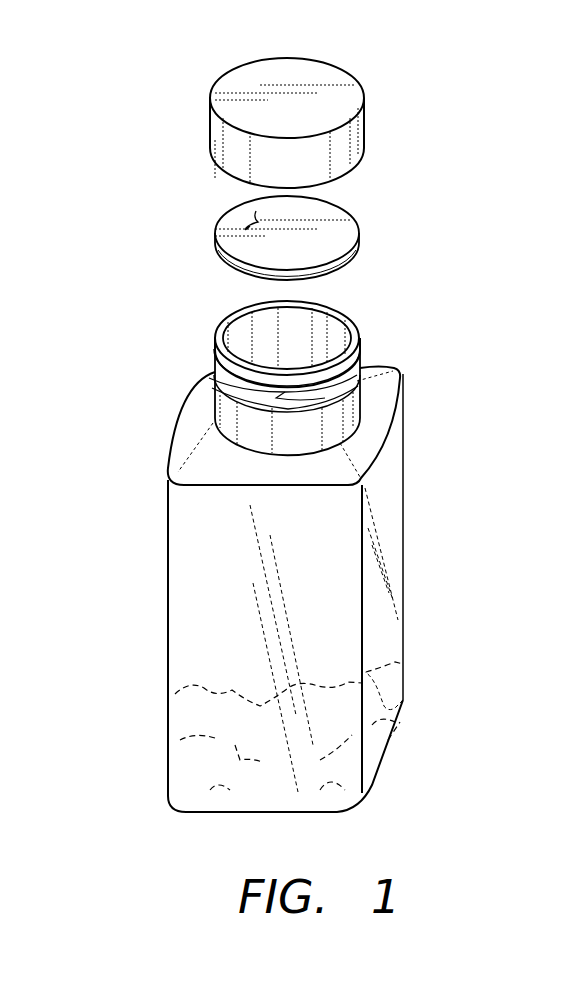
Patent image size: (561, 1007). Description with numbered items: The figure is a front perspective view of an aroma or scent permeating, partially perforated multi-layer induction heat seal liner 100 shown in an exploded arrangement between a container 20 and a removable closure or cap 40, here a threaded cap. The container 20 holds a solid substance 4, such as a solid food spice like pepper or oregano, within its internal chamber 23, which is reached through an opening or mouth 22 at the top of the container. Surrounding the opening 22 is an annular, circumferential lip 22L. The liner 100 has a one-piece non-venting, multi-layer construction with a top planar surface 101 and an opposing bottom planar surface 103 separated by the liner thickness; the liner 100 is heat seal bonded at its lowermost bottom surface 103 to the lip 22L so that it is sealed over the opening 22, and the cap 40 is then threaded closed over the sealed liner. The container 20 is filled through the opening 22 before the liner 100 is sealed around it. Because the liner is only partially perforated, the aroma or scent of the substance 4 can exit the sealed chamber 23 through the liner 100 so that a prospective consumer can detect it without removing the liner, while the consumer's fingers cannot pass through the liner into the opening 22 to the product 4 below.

The removable closure or cap 40 is at (364, 108).
The induction heat seal liner 100 is at (362, 230).
The top planar surface 101 is at (250, 222).
The bottom planar surface 103 is at (230, 266).
The container 20 is at (177, 436).
The opening or mouth 22 is at (302, 342).
The annular lip 22L is at (360, 330).
The internal chamber 23 is at (315, 547).
The solid substance 4 is at (225, 672).